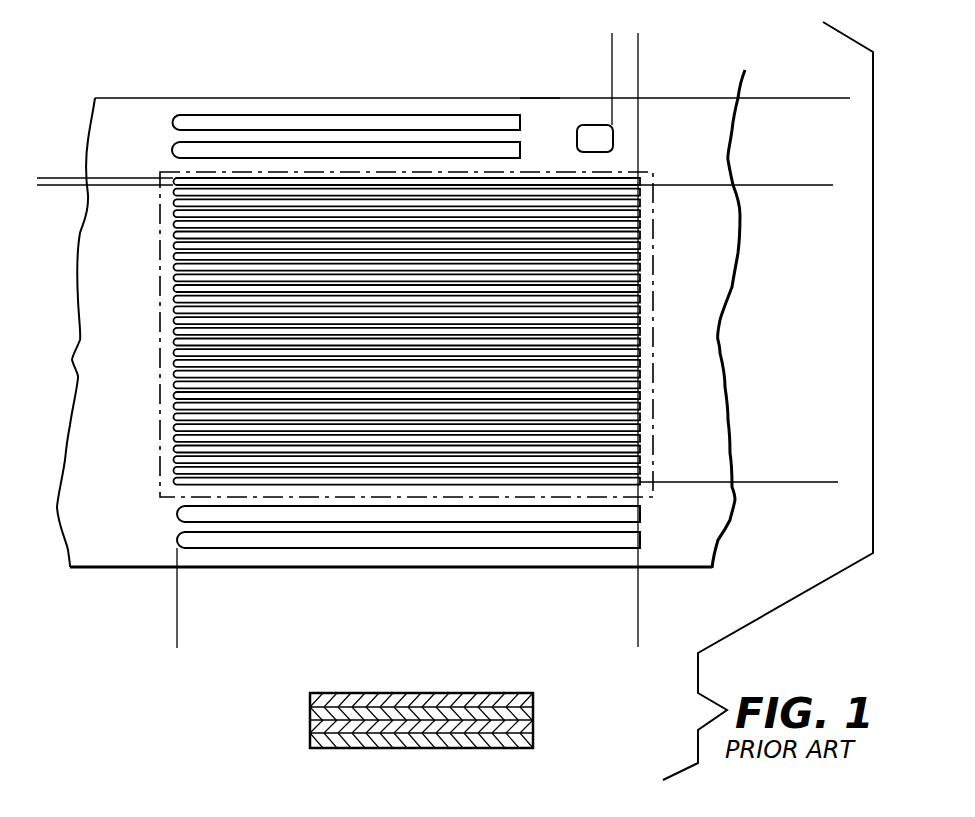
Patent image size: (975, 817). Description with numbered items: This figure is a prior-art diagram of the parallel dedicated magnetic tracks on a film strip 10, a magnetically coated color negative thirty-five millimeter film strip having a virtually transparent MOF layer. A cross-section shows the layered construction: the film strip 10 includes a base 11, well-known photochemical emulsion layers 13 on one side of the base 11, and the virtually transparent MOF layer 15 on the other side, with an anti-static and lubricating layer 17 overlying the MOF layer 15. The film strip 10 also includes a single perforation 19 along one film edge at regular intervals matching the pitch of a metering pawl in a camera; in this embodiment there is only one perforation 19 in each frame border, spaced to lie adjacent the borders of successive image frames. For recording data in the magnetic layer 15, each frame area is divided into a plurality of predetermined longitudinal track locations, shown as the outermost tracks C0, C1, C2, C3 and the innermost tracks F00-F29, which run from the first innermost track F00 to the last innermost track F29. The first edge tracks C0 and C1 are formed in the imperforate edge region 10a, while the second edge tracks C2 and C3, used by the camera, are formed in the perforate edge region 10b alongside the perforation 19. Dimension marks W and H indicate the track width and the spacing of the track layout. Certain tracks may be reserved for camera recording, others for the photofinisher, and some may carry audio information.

The film strip 10 is at (536, 691).
The imperforate edge region 10a is at (624, 622).
The perforate edge region 10b is at (532, 112).
The base 11 is at (310, 721).
The photochemical emulsion layers 13 is at (533, 740).
The MOF layer 15 is at (533, 713).
The anti-static and lubricating layer 17 is at (312, 695).
The perforation 19 is at (577, 127).
The finger width W is at (50, 158).
The spacing H is at (582, 55).
The first edge track C0 is at (272, 513).
The first edge track C1 is at (340, 545).
The second edge track C2 is at (238, 150).
The second edge track C3 is at (316, 118).
The innermost track F00 is at (635, 184).
The innermost track F29 is at (640, 485).
The innermost tracks F00-F29 is at (818, 112).